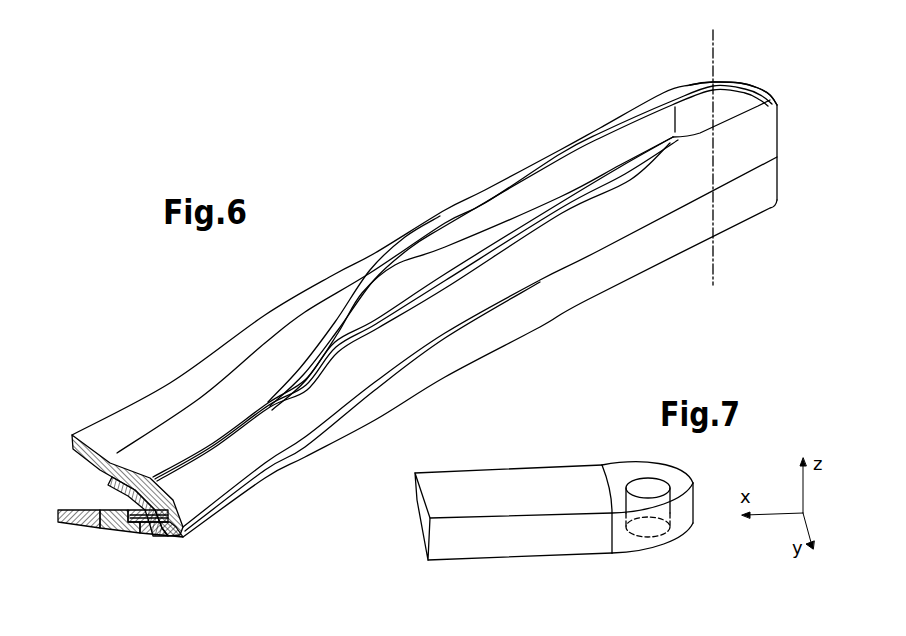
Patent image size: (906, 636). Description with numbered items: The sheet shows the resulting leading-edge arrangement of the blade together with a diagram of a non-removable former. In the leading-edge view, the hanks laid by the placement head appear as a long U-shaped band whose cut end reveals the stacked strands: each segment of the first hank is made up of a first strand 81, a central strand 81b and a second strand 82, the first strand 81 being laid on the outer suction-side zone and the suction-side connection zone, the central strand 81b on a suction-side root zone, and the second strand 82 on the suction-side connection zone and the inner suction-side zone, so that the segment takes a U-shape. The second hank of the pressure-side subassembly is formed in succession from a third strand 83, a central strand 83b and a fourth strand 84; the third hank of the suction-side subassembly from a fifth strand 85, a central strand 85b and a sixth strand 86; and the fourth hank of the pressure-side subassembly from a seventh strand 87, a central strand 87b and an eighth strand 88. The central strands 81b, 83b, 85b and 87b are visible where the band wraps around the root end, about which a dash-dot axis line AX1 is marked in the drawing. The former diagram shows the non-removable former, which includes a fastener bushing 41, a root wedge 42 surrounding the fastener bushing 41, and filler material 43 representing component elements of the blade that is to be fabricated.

In FIG. 6, the first strand 81 is at (70, 447).
In FIG. 6, the second strand 82 is at (110, 468).
In FIG. 6, the third strand 83 is at (62, 528).
In FIG. 6, the fourth strand 84 is at (131, 515).
In FIG. 6, the fifth strand 85 is at (377, 287).
In FIG. 6, the sixth strand 86 is at (197, 483).
In FIG. 6, the seventh strand 87 is at (108, 537).
In FIG. 6, the eighth strand 88 is at (156, 538).
In FIG. 6, the central strand 81b is at (697, 85).
In FIG. 6, the central strand 83b is at (751, 234).
In FIG. 6, the central strand 85b is at (773, 96).
In FIG. 6, the central strand 87b is at (779, 187).
In FIG. 6, the loop axis AX1 is at (712, 55).
In FIG. 7, the fastener bushing 41 is at (634, 476).
In FIG. 7, the root wedge 42 is at (681, 478).
In FIG. 7, the filler material 43 is at (537, 557).